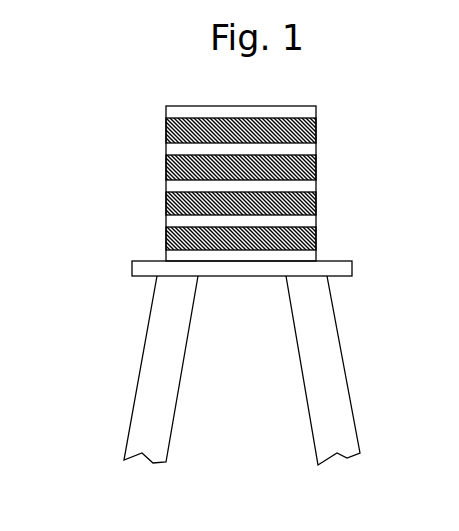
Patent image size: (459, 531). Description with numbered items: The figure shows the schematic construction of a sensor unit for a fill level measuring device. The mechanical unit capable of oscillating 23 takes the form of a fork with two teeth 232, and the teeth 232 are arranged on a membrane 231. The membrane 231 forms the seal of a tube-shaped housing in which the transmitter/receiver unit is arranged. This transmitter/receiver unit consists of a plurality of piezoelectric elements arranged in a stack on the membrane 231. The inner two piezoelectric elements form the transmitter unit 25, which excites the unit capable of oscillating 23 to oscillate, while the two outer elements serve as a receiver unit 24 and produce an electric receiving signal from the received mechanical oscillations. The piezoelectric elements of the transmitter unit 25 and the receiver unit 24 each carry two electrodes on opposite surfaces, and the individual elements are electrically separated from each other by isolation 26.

The unit capable of oscillating 23 is at (188, 358).
The membrane 231 is at (195, 264).
The teeth 232 is at (242, 370).
The receiver unit 24 is at (205, 170).
The transmitter unit 25 is at (197, 185).
The isolation 26 is at (281, 174).